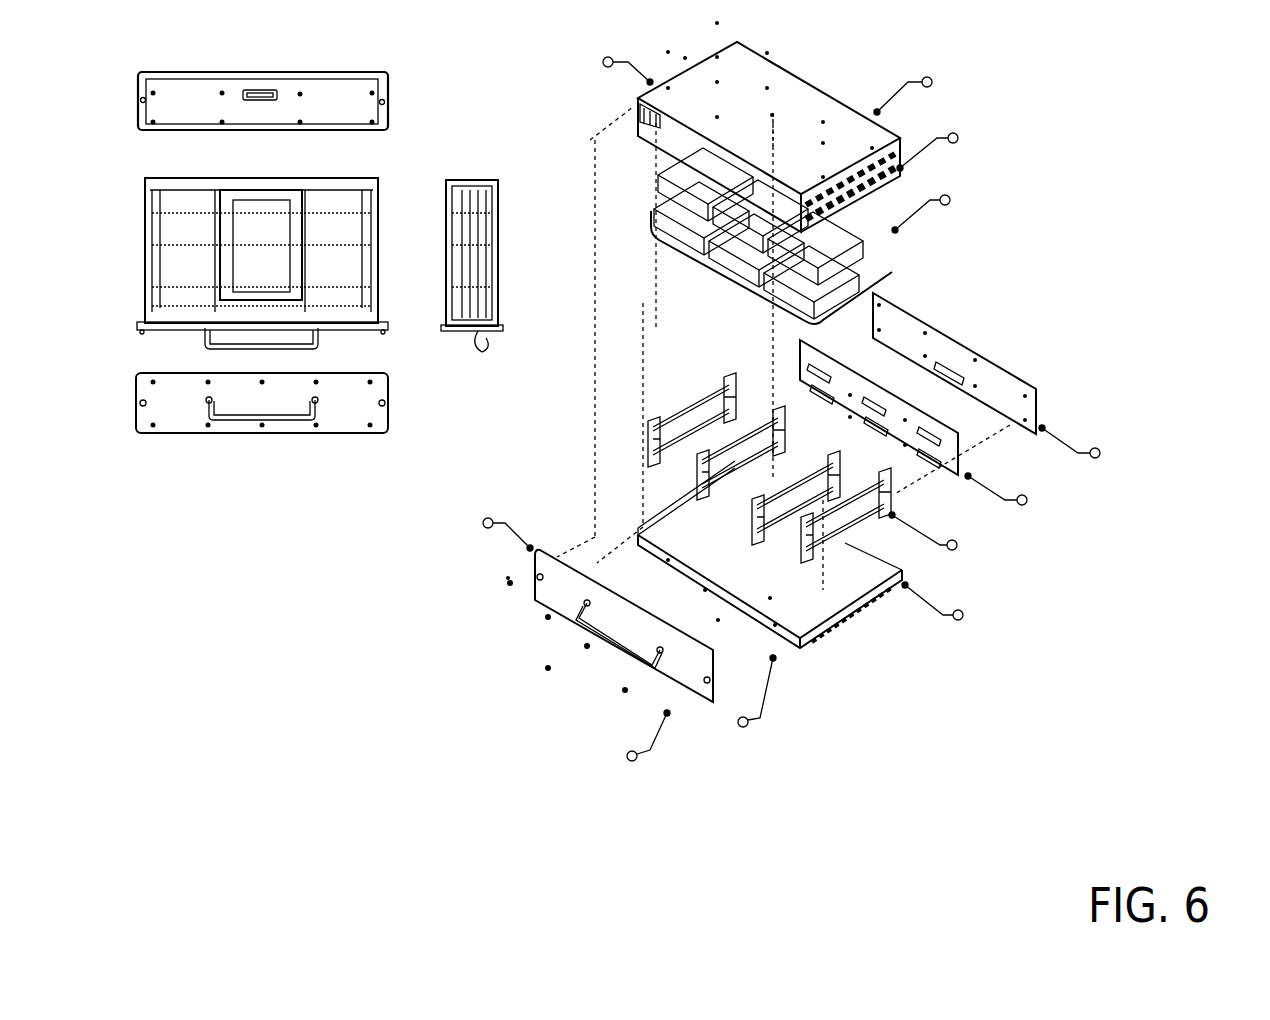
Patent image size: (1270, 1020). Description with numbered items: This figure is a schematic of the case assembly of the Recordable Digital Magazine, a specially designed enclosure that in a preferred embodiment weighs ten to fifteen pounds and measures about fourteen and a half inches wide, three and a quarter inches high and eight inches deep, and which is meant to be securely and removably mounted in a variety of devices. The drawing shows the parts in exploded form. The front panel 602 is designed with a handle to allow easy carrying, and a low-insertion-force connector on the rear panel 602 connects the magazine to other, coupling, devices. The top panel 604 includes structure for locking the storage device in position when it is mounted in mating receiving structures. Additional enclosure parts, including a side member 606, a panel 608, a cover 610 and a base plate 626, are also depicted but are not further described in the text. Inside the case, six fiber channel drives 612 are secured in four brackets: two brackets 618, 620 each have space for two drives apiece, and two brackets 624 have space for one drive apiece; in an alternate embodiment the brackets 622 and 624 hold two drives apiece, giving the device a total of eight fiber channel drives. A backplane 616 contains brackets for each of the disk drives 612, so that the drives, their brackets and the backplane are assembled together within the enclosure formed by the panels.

The front panel 602 is at (378, 72).
The top panel 604 is at (360, 180).
The end panel 606 is at (480, 180).
The front panel 608 is at (370, 373).
The top cover 610 is at (797, 74).
The fiber channel drives 612 is at (727, 268).
The backplane 616 is at (896, 400).
The bracket 618 is at (728, 378).
The bracket 620 is at (780, 412).
The bracket 622 is at (838, 452).
The bracket 624 is at (885, 518).
The base plate 626 is at (857, 612).